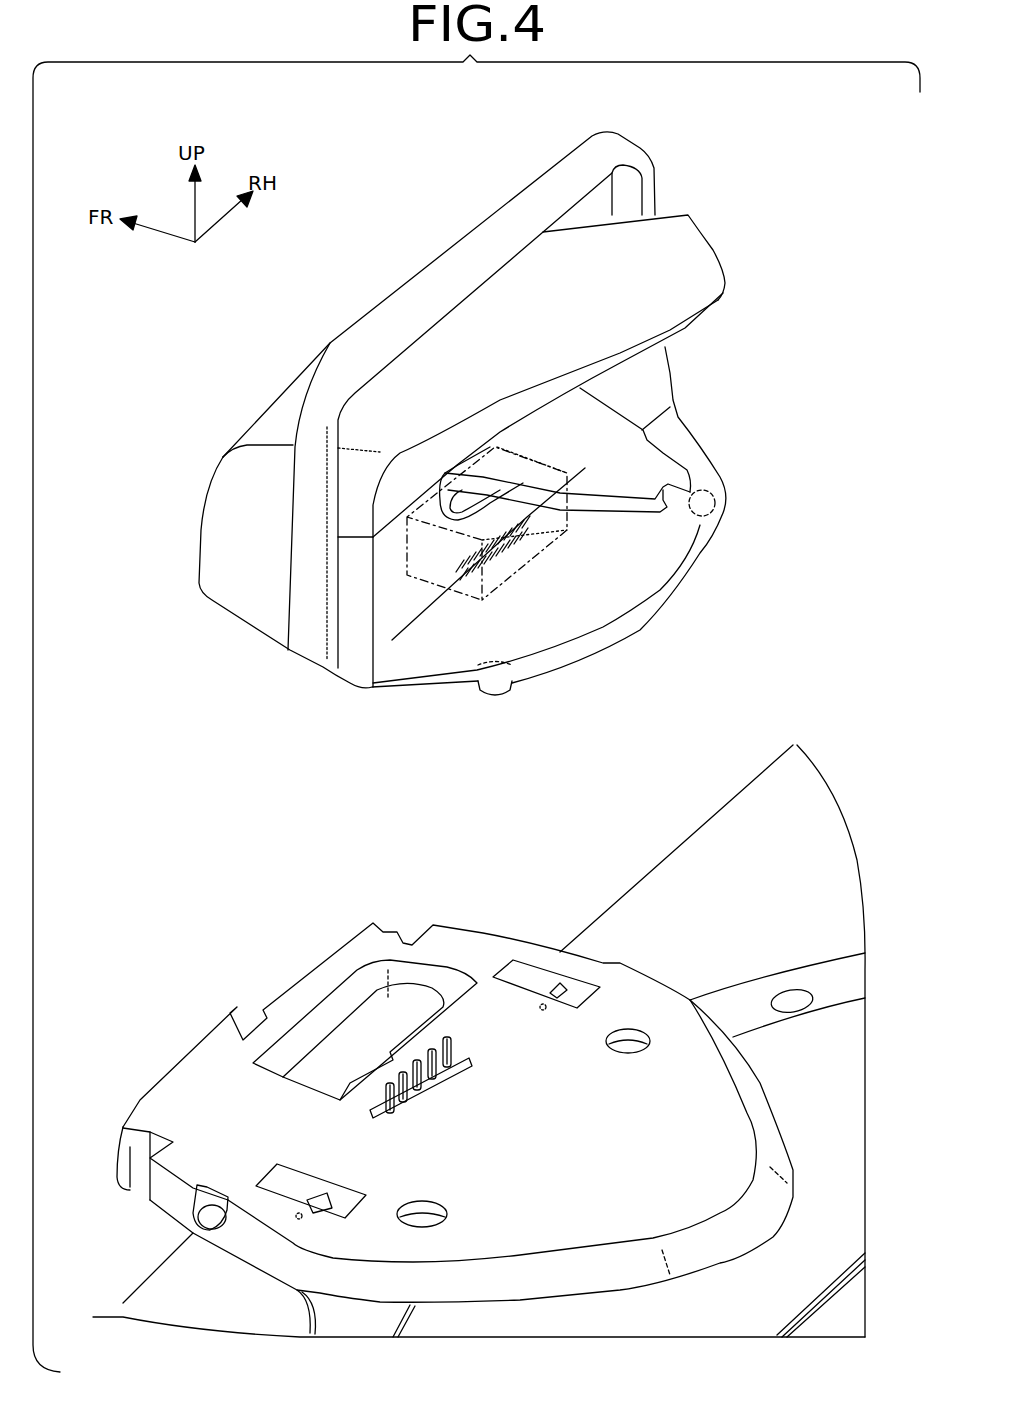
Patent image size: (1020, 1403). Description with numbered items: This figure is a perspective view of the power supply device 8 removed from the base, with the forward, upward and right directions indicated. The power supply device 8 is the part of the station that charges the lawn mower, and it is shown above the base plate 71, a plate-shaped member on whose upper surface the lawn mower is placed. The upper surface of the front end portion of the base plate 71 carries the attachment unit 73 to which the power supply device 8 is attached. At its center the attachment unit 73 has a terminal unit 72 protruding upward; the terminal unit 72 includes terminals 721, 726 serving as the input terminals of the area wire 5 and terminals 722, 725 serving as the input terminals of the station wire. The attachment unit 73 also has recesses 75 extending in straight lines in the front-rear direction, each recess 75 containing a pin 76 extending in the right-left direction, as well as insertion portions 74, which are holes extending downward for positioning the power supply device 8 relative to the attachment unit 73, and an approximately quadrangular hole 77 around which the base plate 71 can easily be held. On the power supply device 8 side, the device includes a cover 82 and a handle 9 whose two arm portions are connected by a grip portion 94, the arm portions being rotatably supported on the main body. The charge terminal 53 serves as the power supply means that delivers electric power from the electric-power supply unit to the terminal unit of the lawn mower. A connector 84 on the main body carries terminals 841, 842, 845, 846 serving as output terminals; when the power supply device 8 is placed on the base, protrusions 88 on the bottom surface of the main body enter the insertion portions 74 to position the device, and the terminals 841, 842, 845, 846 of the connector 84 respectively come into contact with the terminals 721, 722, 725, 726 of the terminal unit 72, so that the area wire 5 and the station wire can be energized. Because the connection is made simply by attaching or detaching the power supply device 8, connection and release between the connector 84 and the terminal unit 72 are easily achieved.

The area wire 5 is at (632, 888).
The power supply device 8 is at (492, 413).
The handle 9 is at (439, 373).
The grip portion 94 is at (432, 262).
The cover 82 is at (531, 451).
The charge terminal 53 is at (568, 450).
The connector 84 is at (517, 592).
The terminal 841 is at (472, 603).
The terminal 842 is at (490, 583).
The terminal 845 is at (533, 547).
The terminal 846 is at (573, 522).
The protrusions 88 is at (505, 700).
The base plate 71 is at (807, 963).
The terminal unit 72 is at (451, 1101).
The terminal 721 is at (388, 1118).
The terminal 722 is at (459, 1087).
The terminal 725 is at (459, 1066).
The terminal 726 is at (462, 1043).
The attachment unit 73 is at (455, 1112).
The insertion portions 74 is at (650, 1050).
The recesses 75 is at (527, 962).
The pin 76 is at (570, 985).
The hole 77 is at (323, 997).